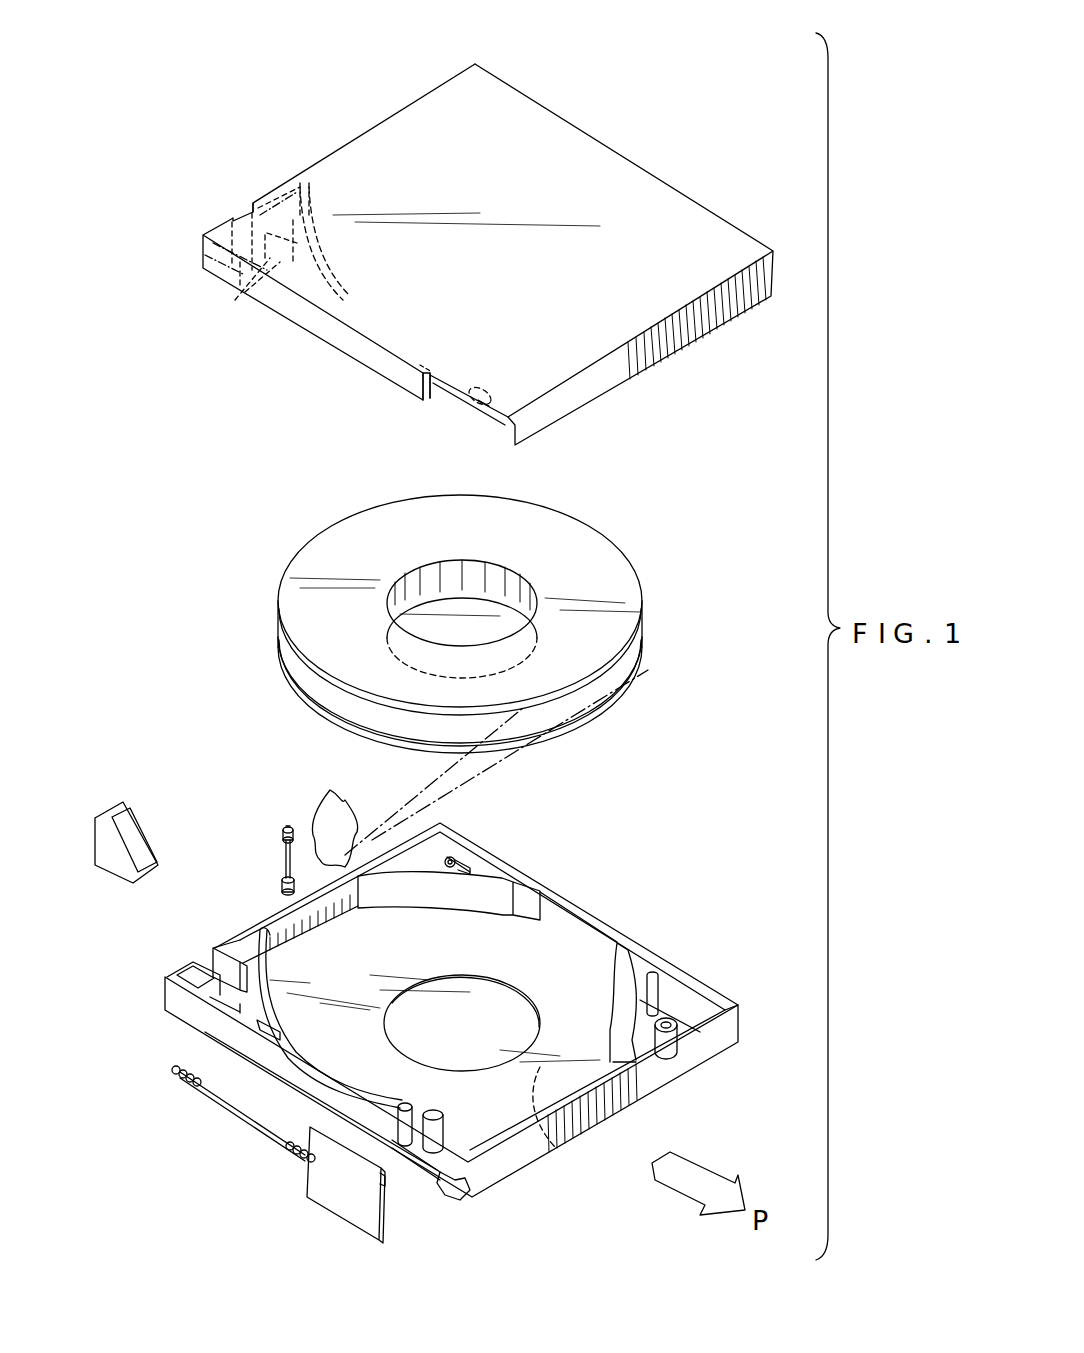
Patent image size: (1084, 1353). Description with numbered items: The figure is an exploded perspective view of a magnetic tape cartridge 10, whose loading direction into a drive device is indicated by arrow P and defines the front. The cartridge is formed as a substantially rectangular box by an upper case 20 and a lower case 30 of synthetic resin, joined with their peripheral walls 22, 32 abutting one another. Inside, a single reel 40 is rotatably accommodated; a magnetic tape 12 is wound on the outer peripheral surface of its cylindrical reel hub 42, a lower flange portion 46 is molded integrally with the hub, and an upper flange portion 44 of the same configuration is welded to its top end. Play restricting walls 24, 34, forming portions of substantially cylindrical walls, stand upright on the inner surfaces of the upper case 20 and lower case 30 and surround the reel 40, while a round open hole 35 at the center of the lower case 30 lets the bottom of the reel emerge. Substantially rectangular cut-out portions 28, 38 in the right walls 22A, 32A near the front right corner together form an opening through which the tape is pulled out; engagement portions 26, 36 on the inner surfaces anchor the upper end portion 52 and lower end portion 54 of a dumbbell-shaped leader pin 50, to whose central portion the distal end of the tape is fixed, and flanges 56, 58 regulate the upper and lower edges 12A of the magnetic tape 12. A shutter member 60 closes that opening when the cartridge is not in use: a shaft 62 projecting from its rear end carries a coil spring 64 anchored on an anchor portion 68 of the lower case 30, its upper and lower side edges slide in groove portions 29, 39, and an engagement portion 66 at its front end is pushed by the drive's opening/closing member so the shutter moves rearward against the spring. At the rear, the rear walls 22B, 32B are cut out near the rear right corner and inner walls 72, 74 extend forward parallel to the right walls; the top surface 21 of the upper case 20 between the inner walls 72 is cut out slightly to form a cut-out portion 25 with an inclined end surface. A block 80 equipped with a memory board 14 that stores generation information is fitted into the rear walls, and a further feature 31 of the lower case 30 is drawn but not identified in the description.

The magnetic tape cartridge 10 is at (681, 90).
The magnetic tape 12 is at (308, 830).
The upper and lower edges of the magnetic tape 12A is at (330, 792).
The memory board 14 is at (137, 840).
The upper case 20 is at (712, 200).
The top surface 21 is at (390, 146).
The peripheral wall 22 is at (713, 303).
The right wall 22A is at (395, 372).
The rear wall 22B is at (328, 182).
The play restricting wall 24 is at (322, 300).
The cut-out portion 25 is at (249, 205).
The engagement portion 26 is at (480, 393).
The cut-out portion 28 is at (444, 378).
The groove portion 29 is at (438, 372).
The lower case 30 is at (690, 1078).
The recess 31 is at (556, 1148).
The peripheral wall 32 is at (638, 1080).
The right wall 32A is at (203, 1015).
The rear wall 32B is at (437, 856).
The play restricting wall 34 is at (482, 890).
The open hole 35 is at (500, 986).
The engagement portion 36 is at (442, 1191).
The cut-out portion 38 is at (400, 1172).
The groove portion 39 is at (442, 1140).
The reel 40 is at (653, 574).
The reel hub 42 is at (496, 586).
The upper flange portion 44 is at (612, 553).
The lower flange portion 46 is at (622, 706).
The leader pin 50 is at (282, 855).
The upper end portion 52 is at (286, 826).
The lower end portion 54 is at (284, 890).
The flange 56 is at (283, 828).
The flange 58 is at (282, 878).
The shutter member 60 is at (340, 1200).
The shaft 62 is at (238, 1120).
The coil spring 64 is at (192, 1086).
The engagement portion 66 is at (378, 1215).
The anchor portion 68 is at (247, 1023).
The inner wall 72 is at (236, 300).
The inner wall 74 is at (228, 966).
The block 80 is at (102, 851).